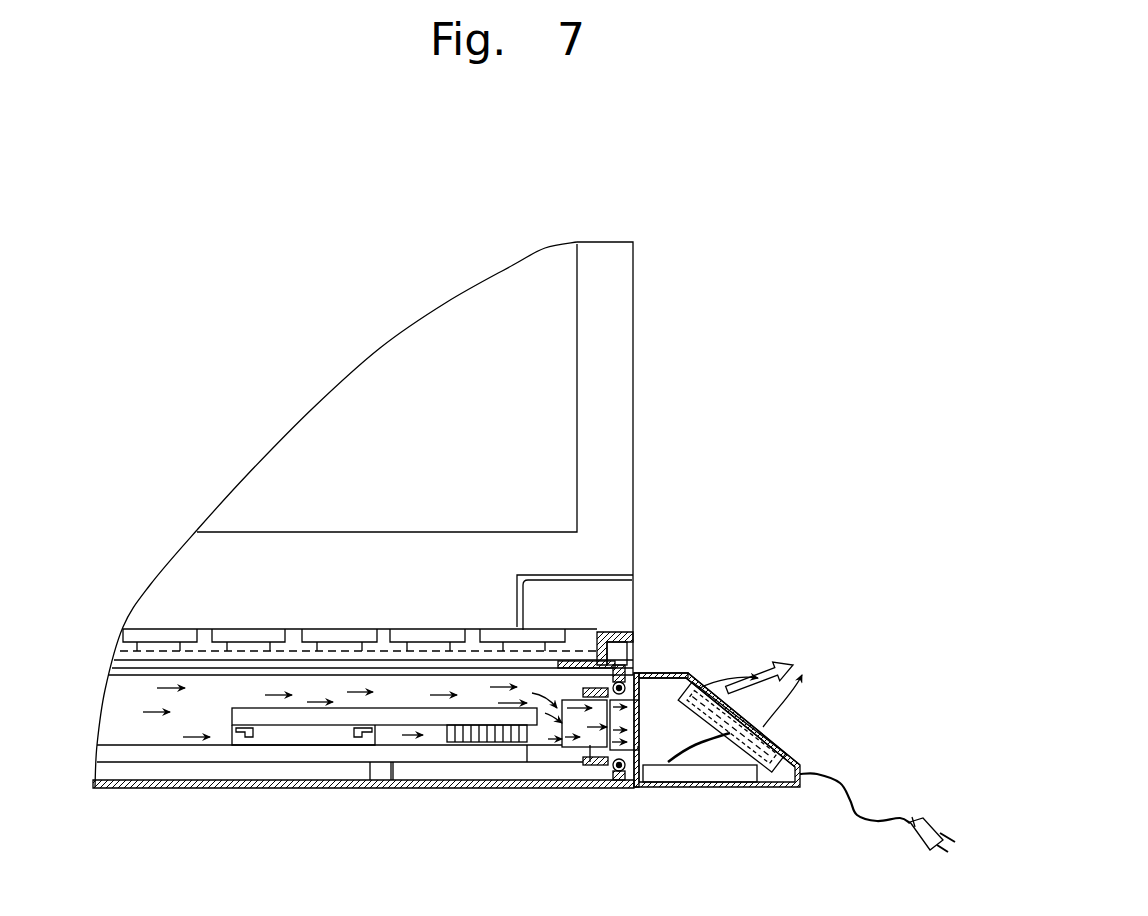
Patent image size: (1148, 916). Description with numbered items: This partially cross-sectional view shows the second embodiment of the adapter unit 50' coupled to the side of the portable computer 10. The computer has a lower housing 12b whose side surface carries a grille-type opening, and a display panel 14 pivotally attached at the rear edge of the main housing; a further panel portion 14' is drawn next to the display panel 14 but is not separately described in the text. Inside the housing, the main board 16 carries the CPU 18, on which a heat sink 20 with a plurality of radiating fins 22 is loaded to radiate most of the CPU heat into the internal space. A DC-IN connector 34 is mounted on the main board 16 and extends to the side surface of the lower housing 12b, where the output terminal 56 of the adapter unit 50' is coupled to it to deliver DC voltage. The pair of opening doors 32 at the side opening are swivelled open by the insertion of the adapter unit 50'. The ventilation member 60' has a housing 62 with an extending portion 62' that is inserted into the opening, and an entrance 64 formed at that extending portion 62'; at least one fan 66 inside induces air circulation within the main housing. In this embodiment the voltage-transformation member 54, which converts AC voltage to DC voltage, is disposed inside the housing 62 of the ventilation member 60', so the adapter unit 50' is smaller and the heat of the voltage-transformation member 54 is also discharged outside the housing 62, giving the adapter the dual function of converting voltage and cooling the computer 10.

The portable computer 10 is at (558, 178).
The lower housing 12b is at (255, 790).
The display panel 14 is at (407, 514).
The rear cover inner panel 14' is at (464, 388).
The main board 16 is at (502, 762).
The CPU 18 is at (295, 742).
The heat sink 20 is at (403, 720).
The radiating fin 22 is at (452, 742).
The opening door 32 is at (597, 694).
The DC-IN connector 34 is at (563, 737).
The adapter unit 50' is at (811, 740).
The voltage-transformation member 54 is at (700, 770).
The output terminal 56 is at (683, 688).
The ventilation member 60' is at (770, 730).
The housing 62 is at (675, 653).
The extending portion 62' is at (657, 755).
The entrance 64 is at (607, 750).
The fan 66 is at (777, 744).